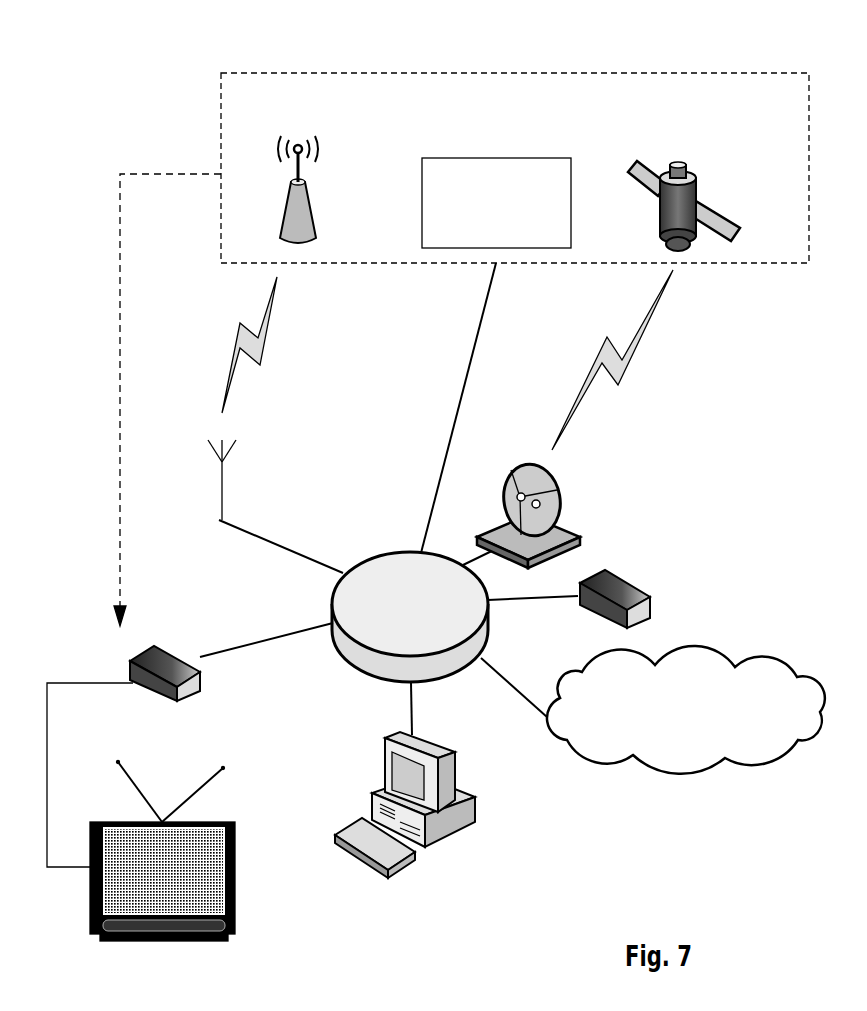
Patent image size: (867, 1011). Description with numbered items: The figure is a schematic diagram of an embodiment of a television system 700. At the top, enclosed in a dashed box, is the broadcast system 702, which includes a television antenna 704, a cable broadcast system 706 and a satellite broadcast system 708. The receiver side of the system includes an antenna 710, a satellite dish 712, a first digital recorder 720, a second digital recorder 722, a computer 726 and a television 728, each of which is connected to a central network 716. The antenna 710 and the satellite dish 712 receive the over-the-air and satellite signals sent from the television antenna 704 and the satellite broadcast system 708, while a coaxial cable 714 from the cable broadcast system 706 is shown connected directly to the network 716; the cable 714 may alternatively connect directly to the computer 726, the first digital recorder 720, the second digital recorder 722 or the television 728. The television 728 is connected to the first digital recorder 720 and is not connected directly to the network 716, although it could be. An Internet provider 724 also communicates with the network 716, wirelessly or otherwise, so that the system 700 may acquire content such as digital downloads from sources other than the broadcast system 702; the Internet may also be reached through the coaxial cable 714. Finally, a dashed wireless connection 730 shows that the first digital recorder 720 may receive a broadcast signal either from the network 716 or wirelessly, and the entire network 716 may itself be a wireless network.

The television system 700 is at (629, 31).
The broadcast system 702 is at (270, 110).
The television antenna 704 is at (312, 212).
The cable broadcast system 706 is at (548, 171).
The satellite broadcast system 708 is at (713, 218).
The antenna 710 is at (224, 482).
The satellite dish 712 is at (582, 533).
The coaxial cable 714 is at (450, 425).
The network 716 is at (382, 562).
The first digital recorder 720 is at (165, 650).
The second digital recorder 722 is at (647, 592).
The Internet provider 724 is at (708, 752).
The computer 726 is at (467, 823).
The television 728 is at (233, 920).
The wireless connection 730 is at (120, 332).